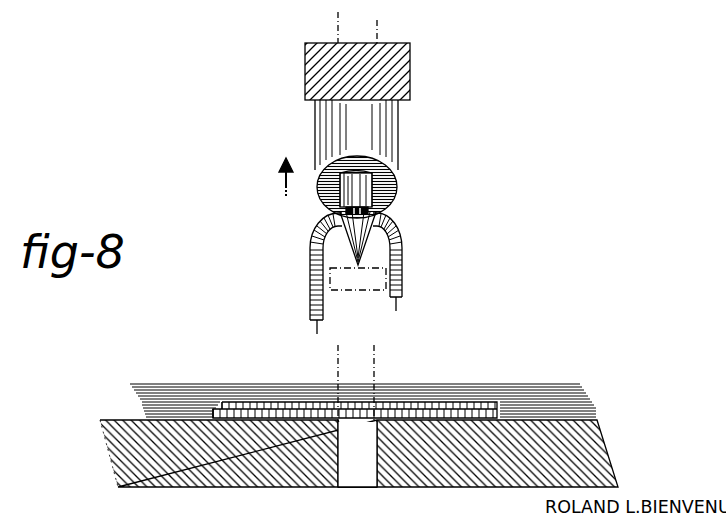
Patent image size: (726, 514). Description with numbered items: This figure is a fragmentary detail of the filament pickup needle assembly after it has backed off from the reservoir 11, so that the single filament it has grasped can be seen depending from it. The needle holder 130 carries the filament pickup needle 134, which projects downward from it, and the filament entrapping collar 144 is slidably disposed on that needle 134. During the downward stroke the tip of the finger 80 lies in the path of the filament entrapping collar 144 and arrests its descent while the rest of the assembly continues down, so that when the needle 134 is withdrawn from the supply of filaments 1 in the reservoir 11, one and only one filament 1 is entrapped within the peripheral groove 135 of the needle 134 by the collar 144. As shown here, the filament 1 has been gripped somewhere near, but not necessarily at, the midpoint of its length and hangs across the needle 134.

The filament 1 is at (400, 249).
The reservoir 11 is at (462, 483).
The finger 80 is at (357, 290).
The needle holder 130 is at (372, 33).
The filament pickup needle 134 is at (368, 238).
The peripheral groove 135 is at (393, 205).
The filament entrapping collar 144 is at (400, 67).